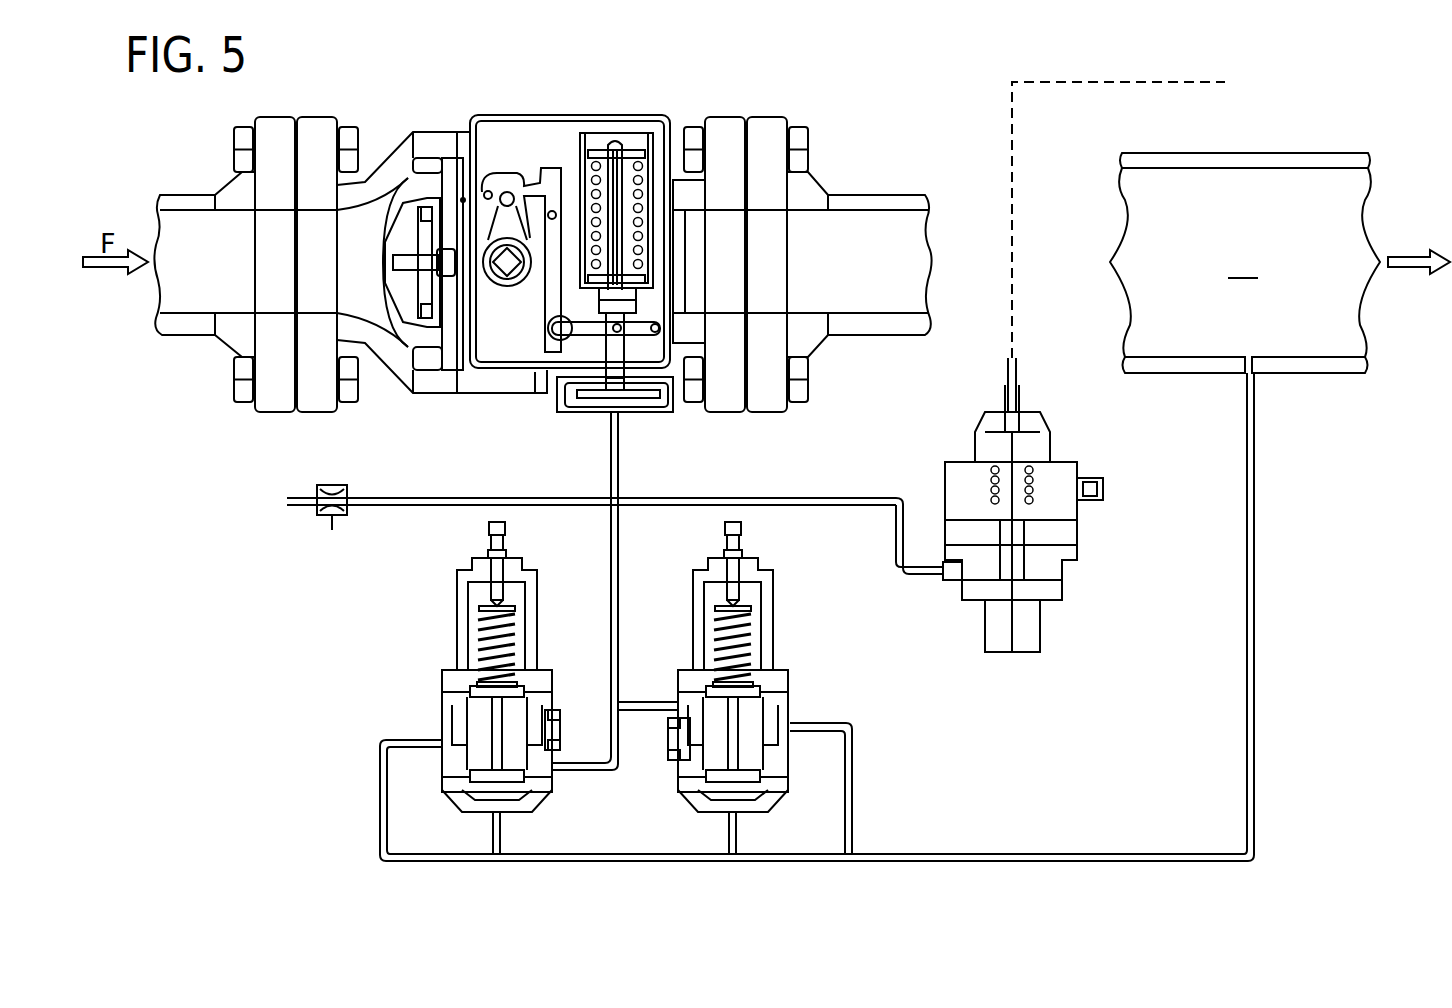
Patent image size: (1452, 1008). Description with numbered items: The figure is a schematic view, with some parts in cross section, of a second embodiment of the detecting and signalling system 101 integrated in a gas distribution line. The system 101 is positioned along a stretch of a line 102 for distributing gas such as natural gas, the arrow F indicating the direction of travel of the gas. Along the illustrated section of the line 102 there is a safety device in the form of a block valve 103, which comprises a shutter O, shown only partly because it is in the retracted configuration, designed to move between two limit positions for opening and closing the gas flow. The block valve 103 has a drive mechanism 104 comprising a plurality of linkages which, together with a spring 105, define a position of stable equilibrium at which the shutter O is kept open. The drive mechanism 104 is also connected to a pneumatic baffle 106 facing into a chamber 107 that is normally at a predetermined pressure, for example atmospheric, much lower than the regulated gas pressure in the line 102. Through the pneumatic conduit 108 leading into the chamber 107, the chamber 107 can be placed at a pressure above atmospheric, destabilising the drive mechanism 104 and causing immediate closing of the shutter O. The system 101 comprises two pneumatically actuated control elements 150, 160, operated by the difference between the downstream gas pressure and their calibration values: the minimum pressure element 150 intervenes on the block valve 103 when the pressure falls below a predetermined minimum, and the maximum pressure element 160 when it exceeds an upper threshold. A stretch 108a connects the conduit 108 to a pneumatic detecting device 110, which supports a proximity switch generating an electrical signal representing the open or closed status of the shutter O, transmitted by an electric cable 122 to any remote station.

The detecting and signalling system 101 is at (1136, 587).
The line for distributing gas 102 is at (192, 352).
The block valve 103 is at (527, 238).
The drive mechanism 104 is at (518, 320).
The spring 105 is at (651, 190).
The pneumatic baffle 106 is at (670, 405).
The chamber 107 is at (601, 404).
The pneumatic conduit 108 is at (628, 459).
The stretch of conduit 108a is at (823, 516).
The pneumatic detecting device 110 is at (972, 430).
The electric cable 122 is at (1112, 82).
The control element 150 is at (436, 635).
The control element 160 is at (781, 629).
The shutter O is at (458, 193).